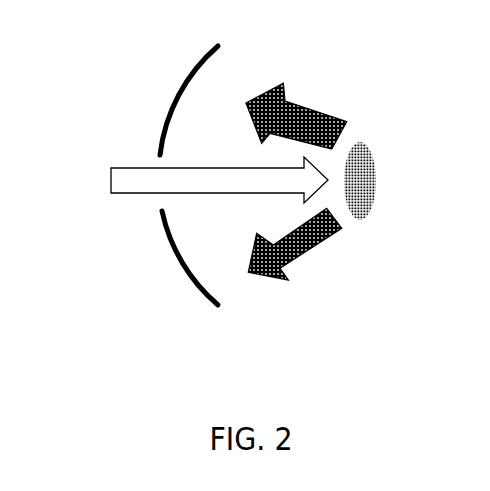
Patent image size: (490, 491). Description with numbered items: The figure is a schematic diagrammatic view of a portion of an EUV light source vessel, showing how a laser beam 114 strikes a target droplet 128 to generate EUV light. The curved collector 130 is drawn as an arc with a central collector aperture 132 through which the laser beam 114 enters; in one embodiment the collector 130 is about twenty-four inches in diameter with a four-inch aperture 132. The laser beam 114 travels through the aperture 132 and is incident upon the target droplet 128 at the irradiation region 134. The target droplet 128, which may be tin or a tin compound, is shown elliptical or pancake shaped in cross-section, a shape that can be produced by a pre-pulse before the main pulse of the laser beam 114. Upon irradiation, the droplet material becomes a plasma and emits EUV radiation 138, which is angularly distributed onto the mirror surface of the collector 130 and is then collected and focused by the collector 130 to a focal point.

The laser beam 114 is at (142, 198).
The target droplet 128 is at (363, 227).
The collector 130 is at (178, 90).
The collector aperture 132 is at (142, 157).
The irradiation region 134 is at (394, 97).
The EUV radiation 138 is at (273, 278).